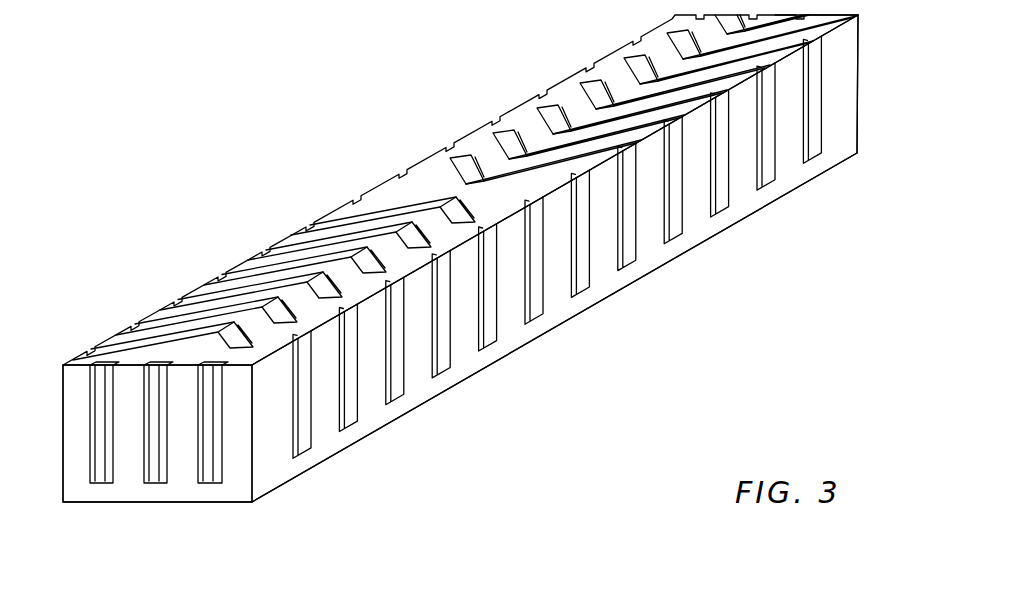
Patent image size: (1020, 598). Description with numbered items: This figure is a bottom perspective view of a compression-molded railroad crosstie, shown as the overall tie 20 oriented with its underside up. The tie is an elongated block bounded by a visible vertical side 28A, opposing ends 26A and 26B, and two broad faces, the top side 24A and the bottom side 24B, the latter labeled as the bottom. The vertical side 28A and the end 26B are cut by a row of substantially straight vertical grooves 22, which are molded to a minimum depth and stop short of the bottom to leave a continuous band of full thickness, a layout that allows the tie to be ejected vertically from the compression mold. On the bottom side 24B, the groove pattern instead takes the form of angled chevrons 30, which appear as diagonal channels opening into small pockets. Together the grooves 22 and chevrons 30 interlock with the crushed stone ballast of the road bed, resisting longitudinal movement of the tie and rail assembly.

The fiber holding block 20 is at (356, 175).
The slots 22 is at (358, 383).
The top side 24A is at (548, 326).
The bottom side 24B is at (235, 282).
The end 26A is at (860, 82).
The end 26B is at (132, 487).
The vertical side 28A is at (657, 245).
The chevrons 30 is at (493, 130).